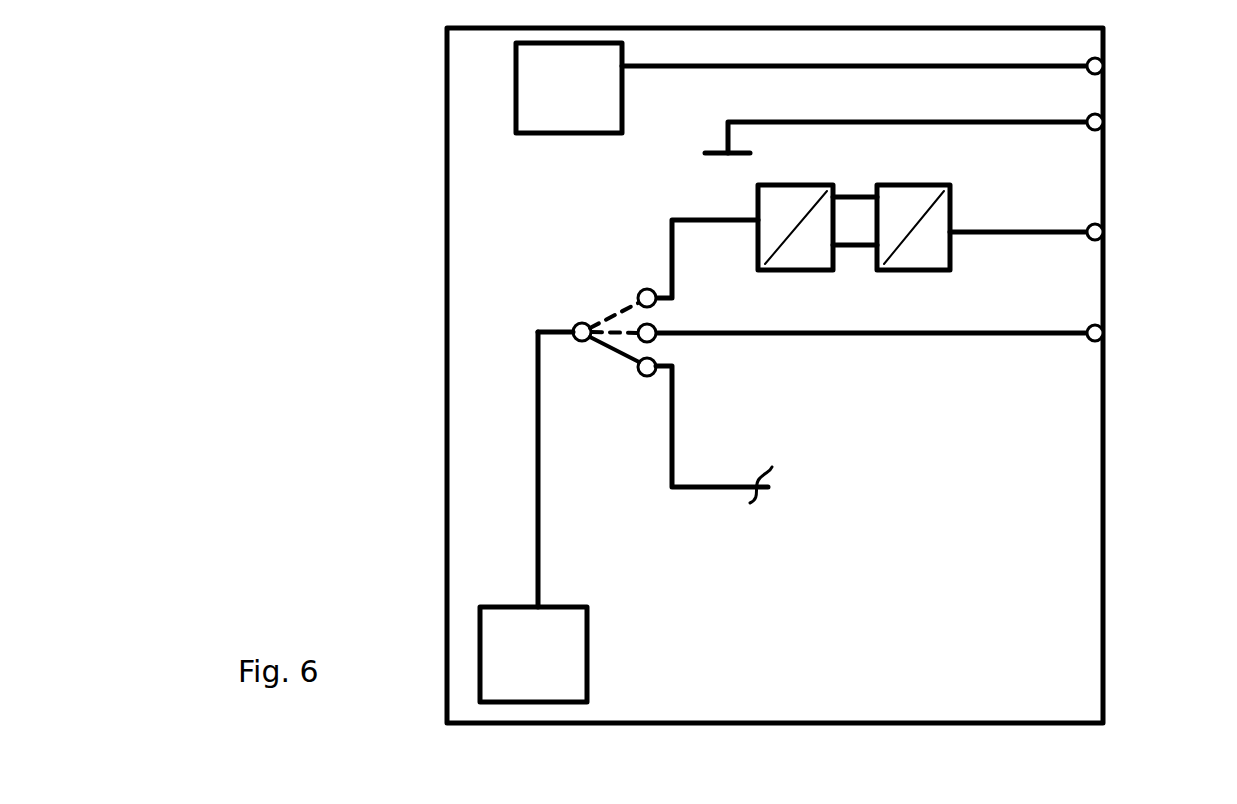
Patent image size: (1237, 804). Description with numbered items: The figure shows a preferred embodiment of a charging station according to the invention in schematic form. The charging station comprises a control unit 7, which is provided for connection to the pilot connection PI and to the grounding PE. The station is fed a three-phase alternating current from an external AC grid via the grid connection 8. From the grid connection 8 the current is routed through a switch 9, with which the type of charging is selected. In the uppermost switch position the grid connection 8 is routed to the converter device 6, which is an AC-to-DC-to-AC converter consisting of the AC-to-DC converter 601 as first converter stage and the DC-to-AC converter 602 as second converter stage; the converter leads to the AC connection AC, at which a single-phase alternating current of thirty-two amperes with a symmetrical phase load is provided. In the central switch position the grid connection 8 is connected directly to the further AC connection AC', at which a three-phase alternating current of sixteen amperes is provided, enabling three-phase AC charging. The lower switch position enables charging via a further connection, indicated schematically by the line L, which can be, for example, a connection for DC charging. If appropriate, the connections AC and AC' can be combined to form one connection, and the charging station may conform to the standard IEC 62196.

The converter device 6 is at (880, 231).
The AC-to-DC converter 601 is at (795, 186).
The DC-to-AC converter 602 is at (918, 186).
The control unit 7 is at (569, 88).
The grid connection 8 is at (533, 517).
The switch 9 is at (620, 302).
The line L is at (733, 485).
The pilot connection PI is at (1113, 63).
The grounding PE is at (1113, 128).
The AC connection AC is at (1079, 219).
The further AC connection AC' is at (936, 322).